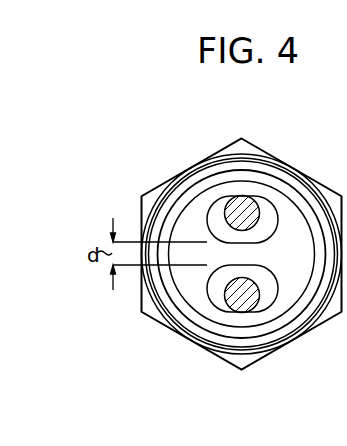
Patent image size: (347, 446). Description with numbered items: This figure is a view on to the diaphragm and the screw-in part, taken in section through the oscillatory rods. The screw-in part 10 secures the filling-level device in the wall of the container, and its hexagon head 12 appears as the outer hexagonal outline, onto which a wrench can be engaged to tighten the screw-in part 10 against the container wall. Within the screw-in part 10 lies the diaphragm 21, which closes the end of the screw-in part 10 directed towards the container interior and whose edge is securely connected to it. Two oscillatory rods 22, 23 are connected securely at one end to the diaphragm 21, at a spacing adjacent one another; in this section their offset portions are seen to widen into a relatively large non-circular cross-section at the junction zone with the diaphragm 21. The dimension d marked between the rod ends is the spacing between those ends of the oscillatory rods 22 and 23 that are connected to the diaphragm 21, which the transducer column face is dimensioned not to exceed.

The screw-in part 10 is at (300, 335).
The hexagon head 12 is at (252, 146).
The diaphragm 21 is at (292, 220).
The oscillatory rod 22 is at (227, 207).
The oscillatory rod 23 is at (229, 302).